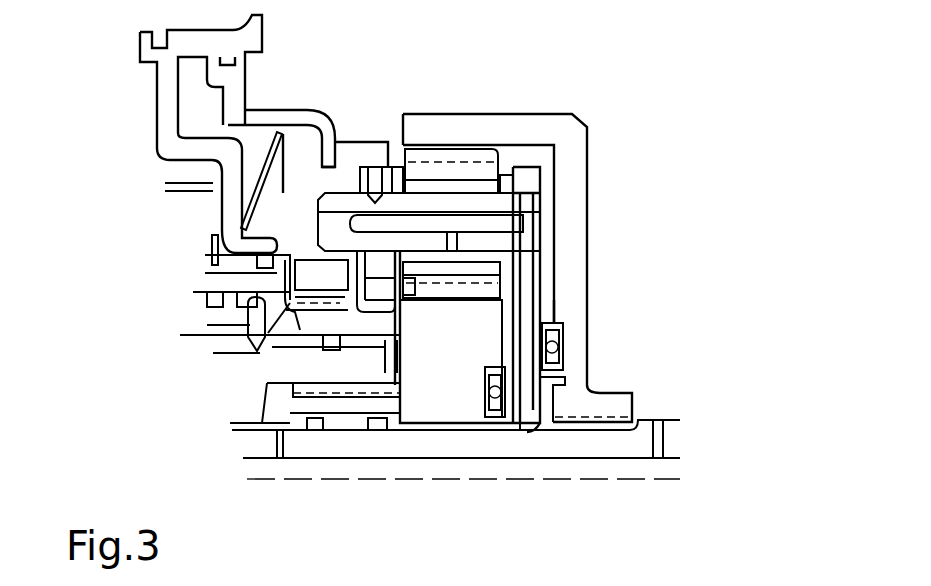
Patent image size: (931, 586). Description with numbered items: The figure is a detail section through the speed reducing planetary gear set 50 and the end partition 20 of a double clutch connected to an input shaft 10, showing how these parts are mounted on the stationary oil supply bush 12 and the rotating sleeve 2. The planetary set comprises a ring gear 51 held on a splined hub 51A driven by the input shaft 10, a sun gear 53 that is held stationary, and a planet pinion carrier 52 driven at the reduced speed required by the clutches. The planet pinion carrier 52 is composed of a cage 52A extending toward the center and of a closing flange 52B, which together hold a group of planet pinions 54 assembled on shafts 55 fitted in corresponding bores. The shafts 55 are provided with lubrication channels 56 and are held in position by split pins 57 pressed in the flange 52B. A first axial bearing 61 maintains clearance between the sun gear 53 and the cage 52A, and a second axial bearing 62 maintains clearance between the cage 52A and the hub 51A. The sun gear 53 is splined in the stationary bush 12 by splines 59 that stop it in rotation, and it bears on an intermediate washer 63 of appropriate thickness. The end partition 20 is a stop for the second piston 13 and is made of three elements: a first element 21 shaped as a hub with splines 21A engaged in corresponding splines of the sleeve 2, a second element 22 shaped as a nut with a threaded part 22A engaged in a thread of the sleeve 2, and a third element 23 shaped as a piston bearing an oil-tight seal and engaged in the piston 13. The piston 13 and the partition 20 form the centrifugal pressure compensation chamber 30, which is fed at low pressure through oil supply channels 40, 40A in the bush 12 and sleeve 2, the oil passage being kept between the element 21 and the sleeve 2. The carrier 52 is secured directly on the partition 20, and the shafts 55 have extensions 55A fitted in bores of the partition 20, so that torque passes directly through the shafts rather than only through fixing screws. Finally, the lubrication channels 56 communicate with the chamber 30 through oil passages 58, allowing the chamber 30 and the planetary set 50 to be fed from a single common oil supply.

The sleeve 2 is at (228, 278).
The input shaft 10 is at (699, 420).
The stationary oil supply bush 12 is at (205, 377).
The second piston 13 is at (157, 75).
The end partition 20 is at (350, 142).
The first element 21 is at (262, 312).
The splines 21A is at (257, 340).
The second element 22 is at (370, 322).
The threaded part 22A is at (390, 353).
The third element 23 is at (278, 118).
The centrifugal pressure compensation chamber 30 is at (290, 165).
The oil supply channel 40 is at (258, 348).
The oil supply channel 40A is at (247, 331).
The speed reducing planetary gear set 50 is at (559, 105).
The ring gear 51 is at (478, 130).
The splined hub 51A is at (573, 323).
The planet pinion carrier 52 is at (540, 273).
The cage 52A is at (530, 410).
The closing flange 52B is at (373, 265).
The sun gear 53 is at (443, 405).
The planet pinions 54 is at (418, 170).
The shafts 55 is at (517, 203).
The extensions 55A is at (318, 206).
The lubrication channels 56 is at (507, 223).
The split pins 57 is at (375, 180).
The oil passages 58 is at (320, 222).
The splines 59 is at (315, 423).
The first axial bearing 61 is at (503, 410).
The second axial bearing 62 is at (553, 348).
The intermediate washer 63 is at (377, 400).